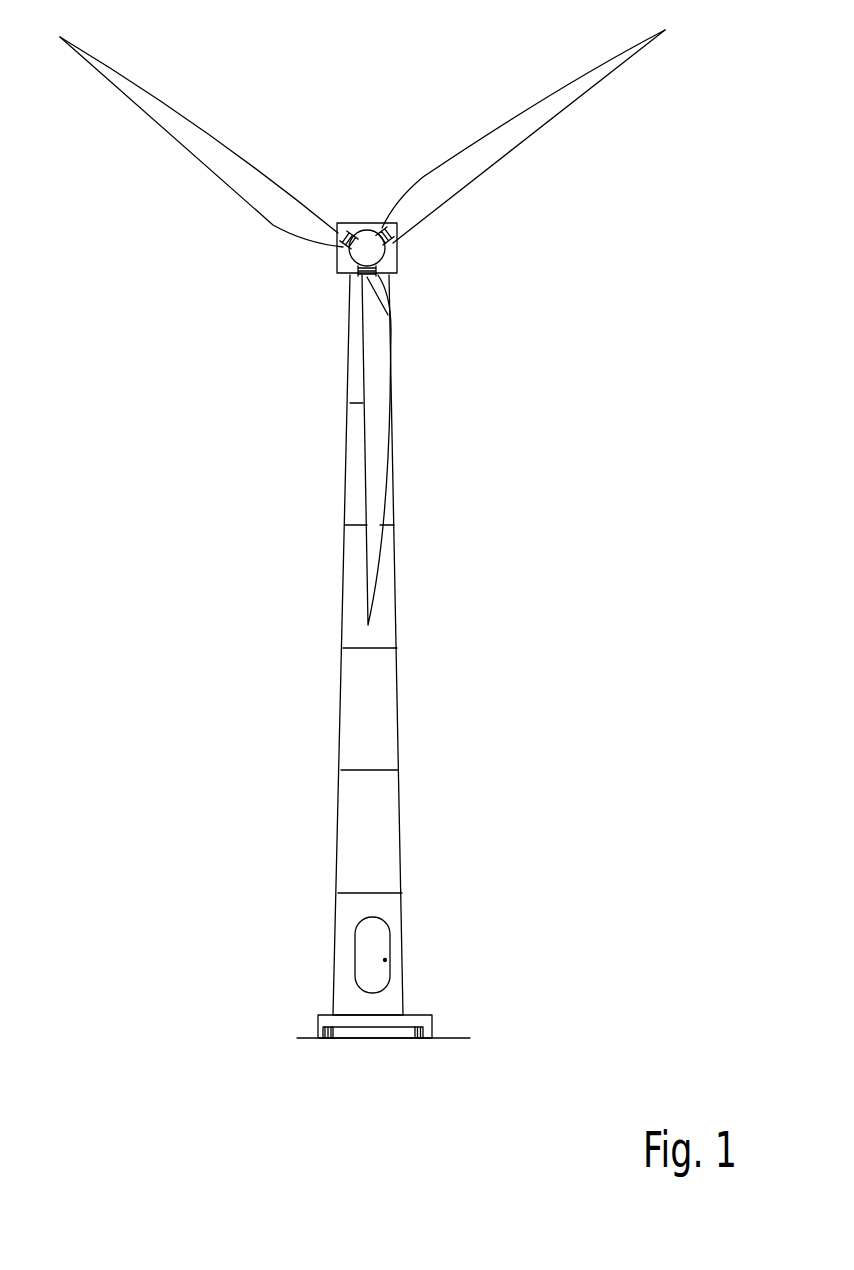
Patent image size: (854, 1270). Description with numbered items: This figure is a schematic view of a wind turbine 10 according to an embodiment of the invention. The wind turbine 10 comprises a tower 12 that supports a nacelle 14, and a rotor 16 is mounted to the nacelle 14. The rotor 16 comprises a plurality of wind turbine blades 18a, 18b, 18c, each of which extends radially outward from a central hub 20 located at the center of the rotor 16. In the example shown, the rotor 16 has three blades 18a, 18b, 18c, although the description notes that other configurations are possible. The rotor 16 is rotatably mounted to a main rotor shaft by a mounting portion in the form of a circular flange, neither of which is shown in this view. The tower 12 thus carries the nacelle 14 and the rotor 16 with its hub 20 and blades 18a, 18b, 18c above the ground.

The wind turbine 10 is at (295, 570).
The tower 12 is at (397, 637).
The nacelle 14 is at (398, 255).
The rotor 16 is at (308, 312).
The wind turbine blade 18a is at (377, 443).
The wind turbine blade 18b is at (220, 143).
The wind turbine blade 18c is at (580, 80).
The central hub 20 is at (365, 228).